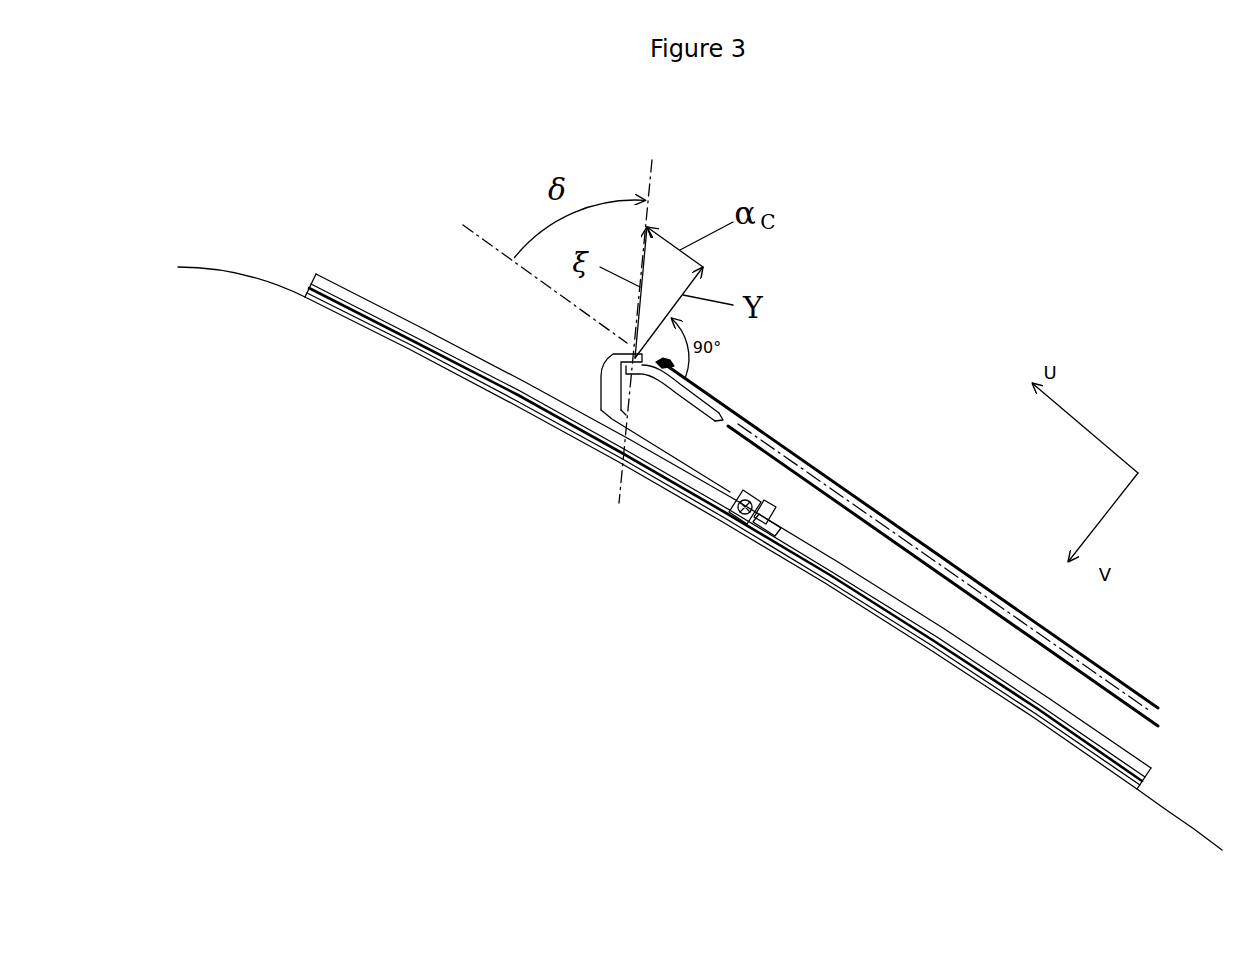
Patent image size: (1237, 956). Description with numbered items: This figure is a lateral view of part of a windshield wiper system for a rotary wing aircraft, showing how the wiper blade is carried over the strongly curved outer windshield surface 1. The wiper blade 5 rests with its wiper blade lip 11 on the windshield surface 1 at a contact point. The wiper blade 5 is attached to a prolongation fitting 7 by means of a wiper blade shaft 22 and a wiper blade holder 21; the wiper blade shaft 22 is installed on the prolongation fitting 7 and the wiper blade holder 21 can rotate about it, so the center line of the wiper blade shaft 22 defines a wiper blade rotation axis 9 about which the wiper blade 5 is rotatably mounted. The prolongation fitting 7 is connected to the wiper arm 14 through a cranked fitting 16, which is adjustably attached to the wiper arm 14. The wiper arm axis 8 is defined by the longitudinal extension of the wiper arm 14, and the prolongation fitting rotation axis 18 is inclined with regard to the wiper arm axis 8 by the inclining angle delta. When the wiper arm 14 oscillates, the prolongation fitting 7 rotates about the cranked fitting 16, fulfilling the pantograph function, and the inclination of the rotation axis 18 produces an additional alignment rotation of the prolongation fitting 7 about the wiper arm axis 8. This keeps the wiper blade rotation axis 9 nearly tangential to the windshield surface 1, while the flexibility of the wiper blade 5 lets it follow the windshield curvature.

The windshield surface 1 is at (277, 259).
The wiper blade 5 is at (720, 486).
The prolongation fitting 7 is at (612, 388).
The wiper arm axis 8 is at (473, 232).
The wiper blade rotation axis 9 is at (796, 460).
The wiper blade lip 11 is at (353, 313).
The wiper arm 14 is at (886, 513).
The cranked fitting 16 is at (683, 388).
The prolongation fitting rotation axis 18 is at (620, 478).
The wiper blade holder 21 is at (775, 513).
The wiper blade shaft 22 is at (750, 502).